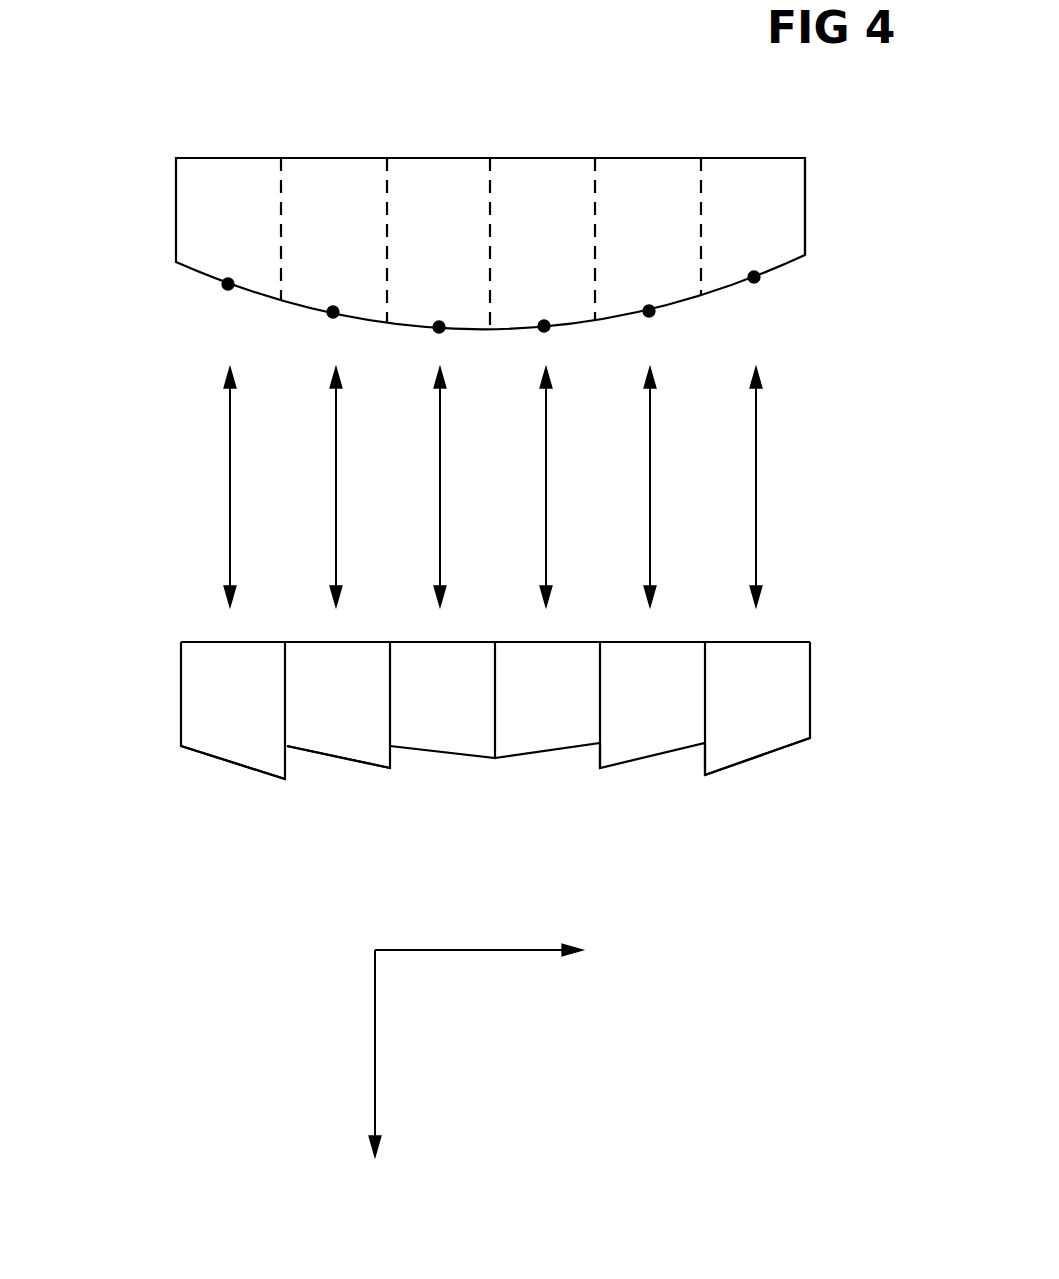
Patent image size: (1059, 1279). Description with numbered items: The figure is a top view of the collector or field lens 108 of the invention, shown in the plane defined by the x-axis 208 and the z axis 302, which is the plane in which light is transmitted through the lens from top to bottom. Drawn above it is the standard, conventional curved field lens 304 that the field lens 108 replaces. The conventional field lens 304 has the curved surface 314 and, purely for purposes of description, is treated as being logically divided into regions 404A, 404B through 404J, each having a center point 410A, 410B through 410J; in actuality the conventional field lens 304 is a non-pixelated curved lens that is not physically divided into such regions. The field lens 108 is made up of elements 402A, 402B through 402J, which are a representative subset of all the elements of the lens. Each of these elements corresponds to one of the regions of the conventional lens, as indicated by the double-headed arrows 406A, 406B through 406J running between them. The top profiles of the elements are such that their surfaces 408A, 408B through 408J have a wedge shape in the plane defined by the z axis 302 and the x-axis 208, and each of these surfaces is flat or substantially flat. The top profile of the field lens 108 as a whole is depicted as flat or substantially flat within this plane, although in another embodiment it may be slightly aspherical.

The conventional curved field lens 304 is at (140, 212).
The region 404A is at (256, 228).
The region 404B is at (360, 228).
The region 404J is at (782, 228).
The curved surface 314 is at (805, 247).
The center point 410A is at (228, 290).
The center point 410B is at (333, 318).
The center point 410J is at (754, 283).
The arrow 406A is at (230, 503).
The arrow 406B is at (336, 515).
The arrow 406J is at (756, 486).
The field lens 108 is at (146, 695).
The element 402A is at (261, 716).
The element 402B is at (365, 716).
The element 402J is at (786, 711).
The surface 408A is at (232, 763).
The surface 408B is at (370, 765).
The surface 408J is at (735, 766).
The x-axis 208 is at (445, 950).
The z axis 302 is at (375, 1100).